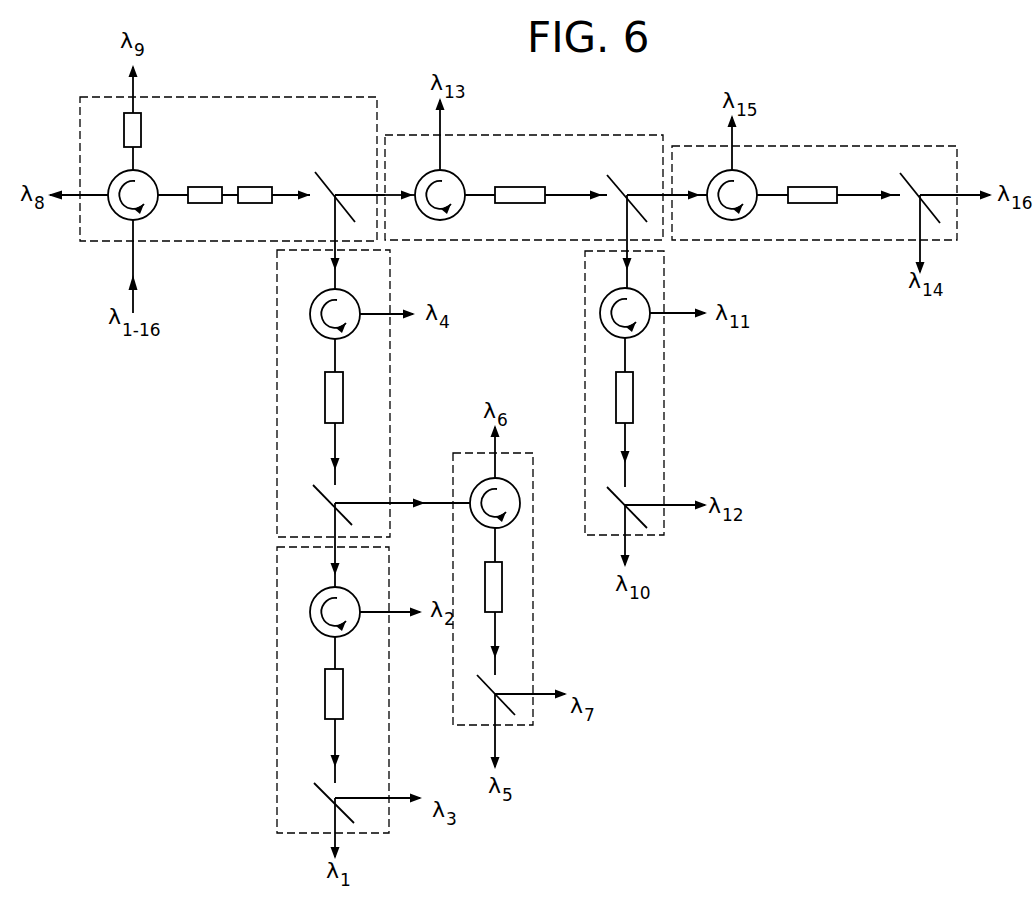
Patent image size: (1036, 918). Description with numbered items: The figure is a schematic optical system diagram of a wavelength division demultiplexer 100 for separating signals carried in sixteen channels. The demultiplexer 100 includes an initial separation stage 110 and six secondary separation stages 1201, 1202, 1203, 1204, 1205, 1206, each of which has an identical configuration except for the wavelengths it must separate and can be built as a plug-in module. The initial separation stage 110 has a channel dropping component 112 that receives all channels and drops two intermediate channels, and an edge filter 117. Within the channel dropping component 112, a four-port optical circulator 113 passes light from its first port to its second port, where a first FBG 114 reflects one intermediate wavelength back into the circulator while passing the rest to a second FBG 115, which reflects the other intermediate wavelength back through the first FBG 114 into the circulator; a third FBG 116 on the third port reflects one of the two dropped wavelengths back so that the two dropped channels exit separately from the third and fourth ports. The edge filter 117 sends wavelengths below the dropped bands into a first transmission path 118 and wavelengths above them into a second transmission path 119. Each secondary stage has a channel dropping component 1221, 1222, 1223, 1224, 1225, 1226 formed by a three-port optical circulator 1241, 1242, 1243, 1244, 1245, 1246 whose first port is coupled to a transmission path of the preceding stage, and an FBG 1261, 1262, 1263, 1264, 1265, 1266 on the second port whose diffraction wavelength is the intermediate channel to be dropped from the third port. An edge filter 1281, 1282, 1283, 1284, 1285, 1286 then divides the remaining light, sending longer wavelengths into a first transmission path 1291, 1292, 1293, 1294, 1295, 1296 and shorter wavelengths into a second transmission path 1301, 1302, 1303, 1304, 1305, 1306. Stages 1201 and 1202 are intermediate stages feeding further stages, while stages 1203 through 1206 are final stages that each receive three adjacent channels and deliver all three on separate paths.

The demultiplexer 100 is at (577, 87).
The initial separation stage 110 is at (290, 97).
The channel dropping component 112 is at (226, 139).
The optical circulator 113 is at (118, 217).
The first FBG 114 is at (214, 187).
The second FBG 115 is at (247, 204).
The third FBG 116 is at (124, 118).
The edge filter 117 is at (316, 172).
The first transmission path 118 is at (335, 216).
The second transmission path 119 is at (358, 194).
The secondary separation stage 1201 is at (277, 348).
The secondary separation stage 1202 is at (465, 135).
The secondary separation stage 1203 is at (277, 655).
The secondary separation stage 1204 is at (533, 586).
The secondary separation stage 1205 is at (585, 345).
The secondary separation stage 1206 is at (755, 146).
The channel dropping component 1221 is at (372, 422).
The channel dropping component 1222 is at (555, 146).
The channel dropping component 1223 is at (372, 710).
The channel dropping component 1224 is at (524, 612).
The channel dropping component 1225 is at (650, 408).
The channel dropping component 1226 is at (853, 160).
The three-port optical circulator 1241 is at (352, 294).
The three-port optical circulator 1242 is at (425, 176).
The three-port optical circulator 1243 is at (310, 600).
The three-port optical circulator 1244 is at (510, 481).
The three-port optical circulator 1245 is at (605, 296).
The three-port optical circulator 1246 is at (745, 216).
The FBG 1261 is at (325, 396).
The FBG 1262 is at (510, 203).
The FBG 1263 is at (325, 680).
The FBG 1264 is at (485, 572).
The FBG 1265 is at (616, 392).
The FBG 1266 is at (817, 203).
The edge filter 1281 is at (313, 495).
The edge filter 1282 is at (608, 175).
The edge filter 1283 is at (314, 795).
The edge filter 1284 is at (477, 683).
The edge filter 1285 is at (607, 487).
The edge filter 1286 is at (901, 173).
The first transmission path 1291 is at (330, 524).
The first transmission path 1292 is at (627, 222).
The first transmission path 1293 is at (328, 820).
The first transmission path 1294 is at (490, 733).
The first transmission path 1295 is at (627, 545).
The first transmission path 1296 is at (912, 225).
The second transmission path 1301 is at (443, 503).
The second transmission path 1302 is at (646, 194).
The second transmission path 1303 is at (362, 798).
The second transmission path 1304 is at (517, 694).
The second transmission path 1305 is at (645, 507).
The second transmission path 1306 is at (945, 192).